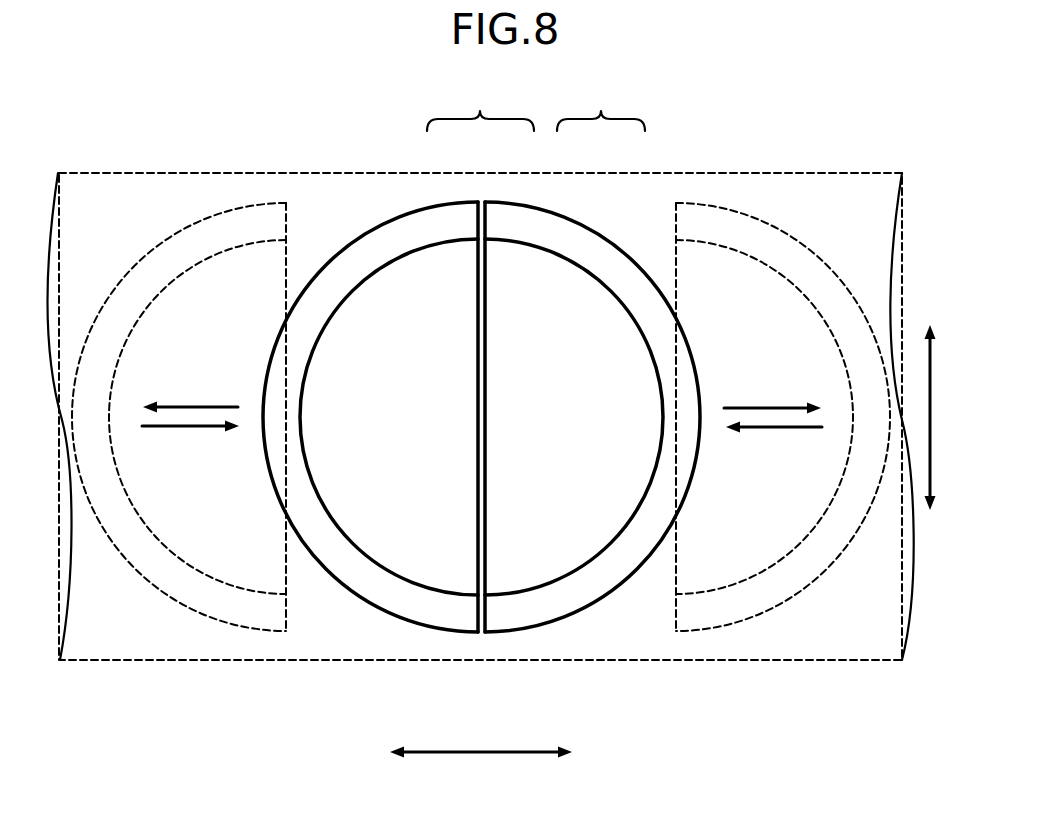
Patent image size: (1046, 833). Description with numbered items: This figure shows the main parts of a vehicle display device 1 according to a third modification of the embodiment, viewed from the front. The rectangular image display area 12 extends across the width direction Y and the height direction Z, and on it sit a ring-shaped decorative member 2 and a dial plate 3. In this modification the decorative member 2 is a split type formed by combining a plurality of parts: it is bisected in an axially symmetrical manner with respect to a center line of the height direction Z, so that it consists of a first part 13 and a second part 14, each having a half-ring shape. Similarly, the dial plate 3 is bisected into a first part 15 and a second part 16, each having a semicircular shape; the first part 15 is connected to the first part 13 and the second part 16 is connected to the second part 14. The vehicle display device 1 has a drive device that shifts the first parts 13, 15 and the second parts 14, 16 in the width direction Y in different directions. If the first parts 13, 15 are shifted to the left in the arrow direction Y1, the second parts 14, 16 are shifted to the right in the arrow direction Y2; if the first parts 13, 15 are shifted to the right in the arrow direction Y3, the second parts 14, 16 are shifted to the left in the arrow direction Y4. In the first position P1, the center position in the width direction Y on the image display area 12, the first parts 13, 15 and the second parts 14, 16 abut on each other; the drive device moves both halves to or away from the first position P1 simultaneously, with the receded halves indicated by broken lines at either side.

The vehicle display device 1 is at (136, 165).
The decorative member 2 is at (480, 104).
The dial plate 3 is at (601, 104).
The image display area 12 is at (846, 172).
The first part 13 is at (442, 194).
The second part 14 is at (508, 194).
The first part 15 is at (456, 276).
The second part 16 is at (540, 274).
The first position P1 is at (537, 648).
The arrow direction Y1 is at (196, 405).
The arrow direction Y2 is at (767, 405).
The arrow direction Y3 is at (183, 428).
The arrow direction Y4 is at (778, 429).
The width direction Y is at (481, 769).
The height direction Z is at (942, 417).